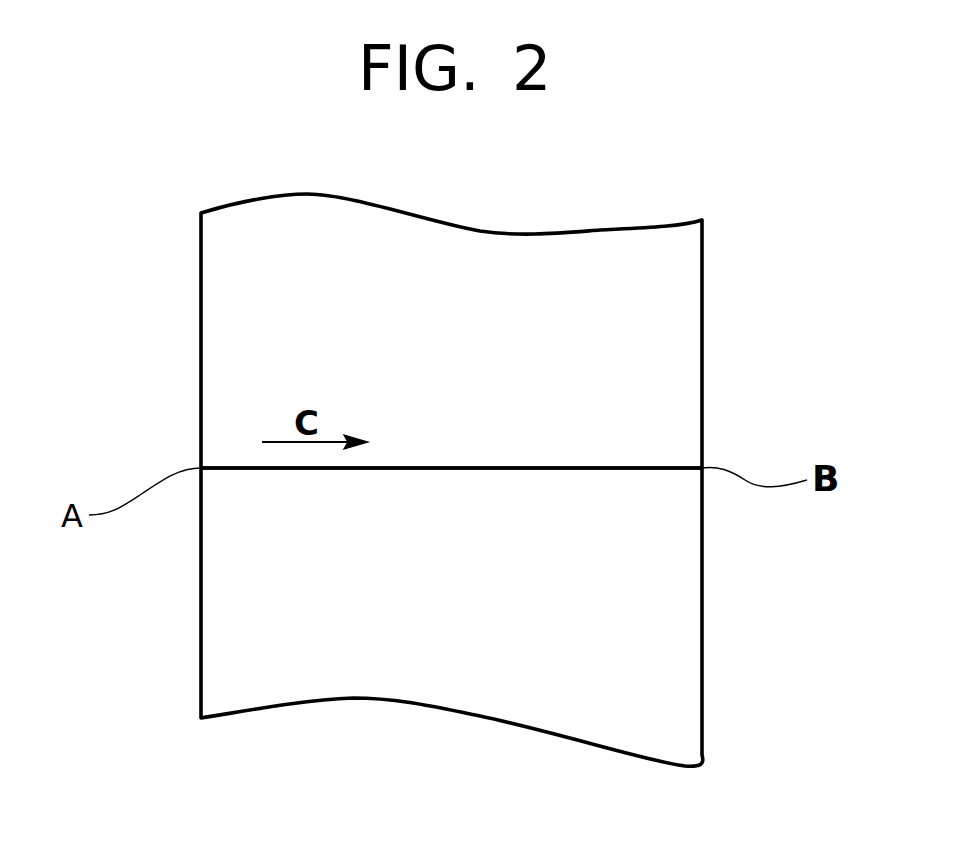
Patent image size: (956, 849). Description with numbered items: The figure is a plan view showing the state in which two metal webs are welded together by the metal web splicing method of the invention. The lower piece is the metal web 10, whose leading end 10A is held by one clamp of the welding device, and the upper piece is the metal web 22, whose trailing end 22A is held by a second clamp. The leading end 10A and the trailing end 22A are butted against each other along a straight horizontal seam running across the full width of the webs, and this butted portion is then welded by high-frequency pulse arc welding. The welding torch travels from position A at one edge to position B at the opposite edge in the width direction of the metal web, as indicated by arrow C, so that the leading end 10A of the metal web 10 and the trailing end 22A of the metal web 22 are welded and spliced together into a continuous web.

The metal web 10 is at (670, 618).
The leading end 10A is at (406, 468).
The metal web 22 is at (668, 346).
The trailing end 22A is at (470, 468).